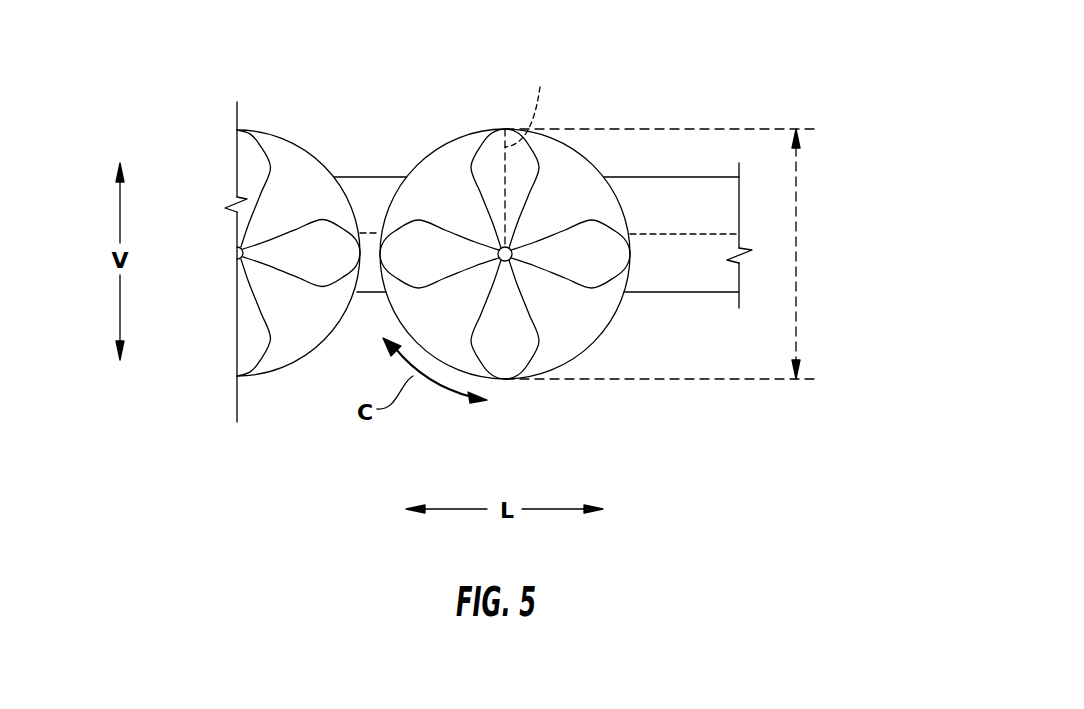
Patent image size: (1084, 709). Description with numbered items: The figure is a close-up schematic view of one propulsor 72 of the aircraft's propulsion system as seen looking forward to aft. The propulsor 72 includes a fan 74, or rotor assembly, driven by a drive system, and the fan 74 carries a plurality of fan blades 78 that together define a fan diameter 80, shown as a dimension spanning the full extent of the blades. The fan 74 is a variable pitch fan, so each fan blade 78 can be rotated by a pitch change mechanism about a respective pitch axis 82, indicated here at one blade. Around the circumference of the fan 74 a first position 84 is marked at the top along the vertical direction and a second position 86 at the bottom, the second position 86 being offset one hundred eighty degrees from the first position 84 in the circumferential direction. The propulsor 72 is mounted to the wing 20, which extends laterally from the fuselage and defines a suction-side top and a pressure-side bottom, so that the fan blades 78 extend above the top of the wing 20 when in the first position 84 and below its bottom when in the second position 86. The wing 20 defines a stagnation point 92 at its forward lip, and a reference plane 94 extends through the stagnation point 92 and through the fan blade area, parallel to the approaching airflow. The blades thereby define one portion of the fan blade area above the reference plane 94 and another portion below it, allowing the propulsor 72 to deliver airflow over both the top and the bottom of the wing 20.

The first wing 20 is at (680, 177).
The propulsor 72 is at (298, 137).
The fan 74 is at (436, 180).
The fan blades 78 is at (522, 165).
The fan diameter 80 is at (797, 258).
The pitch axes 82 is at (531, 106).
The first position 84 is at (500, 112).
The second position 86 is at (503, 415).
The stagnation point 92 is at (686, 335).
The reference plane 94 is at (668, 234).